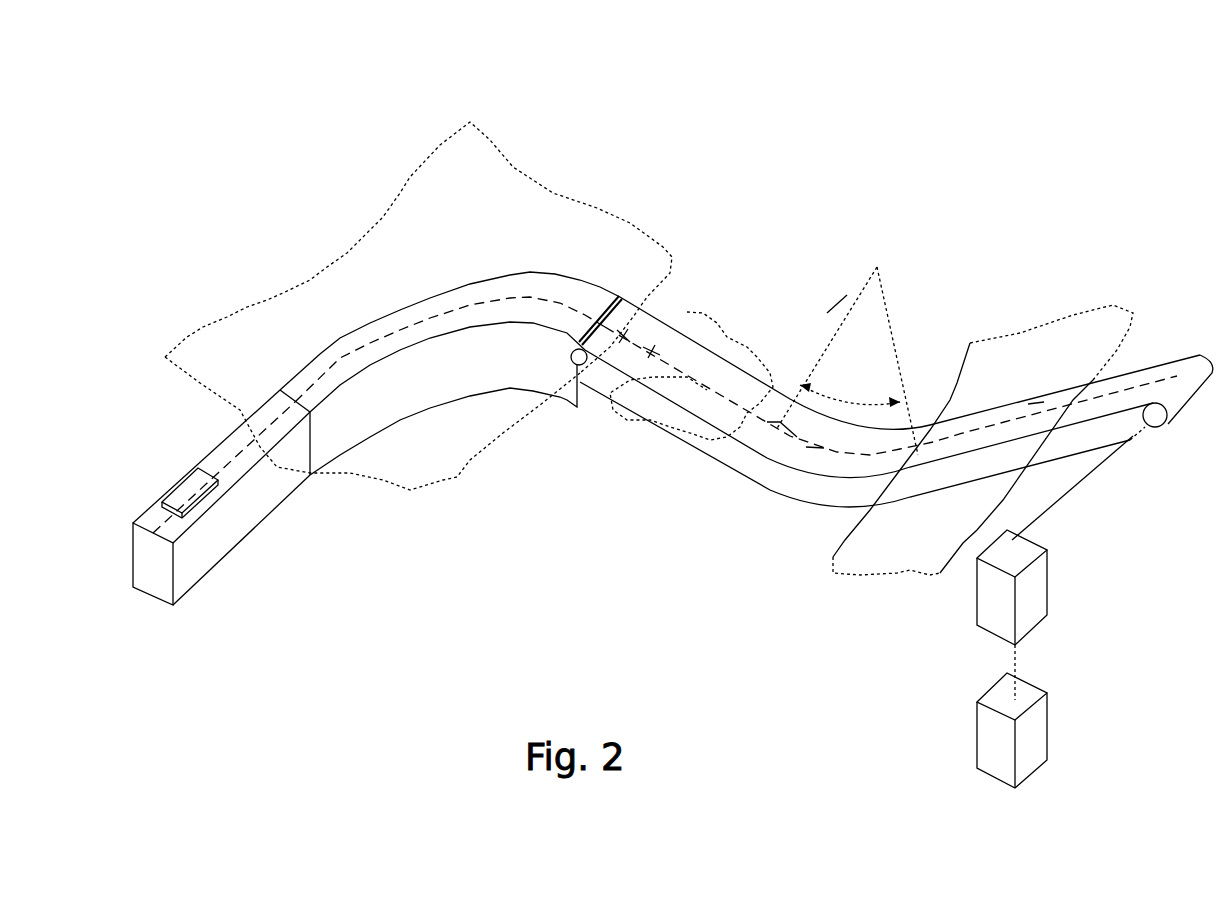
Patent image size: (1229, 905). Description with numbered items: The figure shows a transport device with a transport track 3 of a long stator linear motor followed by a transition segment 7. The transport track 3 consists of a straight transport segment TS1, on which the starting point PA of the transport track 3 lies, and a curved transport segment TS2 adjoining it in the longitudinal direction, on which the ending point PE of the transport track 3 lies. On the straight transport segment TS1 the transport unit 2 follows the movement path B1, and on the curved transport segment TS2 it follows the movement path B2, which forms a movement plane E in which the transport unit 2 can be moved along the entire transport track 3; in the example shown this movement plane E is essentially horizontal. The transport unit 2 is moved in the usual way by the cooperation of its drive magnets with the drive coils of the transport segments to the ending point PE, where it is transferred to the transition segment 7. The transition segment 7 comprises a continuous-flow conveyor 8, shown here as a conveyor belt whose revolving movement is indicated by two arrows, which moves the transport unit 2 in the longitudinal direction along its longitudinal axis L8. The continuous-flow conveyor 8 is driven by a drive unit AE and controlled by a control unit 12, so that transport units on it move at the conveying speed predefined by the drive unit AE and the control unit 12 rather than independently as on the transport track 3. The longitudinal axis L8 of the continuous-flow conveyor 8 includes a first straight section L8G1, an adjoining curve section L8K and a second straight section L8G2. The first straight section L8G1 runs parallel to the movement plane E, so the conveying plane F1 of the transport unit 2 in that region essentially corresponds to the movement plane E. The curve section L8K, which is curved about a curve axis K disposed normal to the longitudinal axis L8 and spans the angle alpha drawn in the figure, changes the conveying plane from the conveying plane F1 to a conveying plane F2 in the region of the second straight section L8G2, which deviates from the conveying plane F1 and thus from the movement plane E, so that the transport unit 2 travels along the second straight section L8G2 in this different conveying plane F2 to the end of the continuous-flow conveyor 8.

The transport track 3 is at (386, 138).
The movement plane E is at (325, 270).
The straight transport segment TS1 is at (380, 540).
The starting point PA is at (165, 518).
The movement path B1 is at (272, 462).
The transport unit 2 is at (187, 493).
The movement path B2 is at (448, 310).
The ending point PE is at (598, 318).
The curved transport segment TS2 is at (507, 352).
The continuous-flow conveyor 8 is at (820, 490).
The transition segment 7 is at (687, 457).
The longitudinal axis L8 is at (680, 410).
The curve section L8K is at (810, 448).
The first straight section L8G1 is at (735, 383).
The second straight section L8G2 is at (1035, 405).
The curve axis K is at (907, 238).
The curve angle alpha is at (850, 391).
The conveying plane F1 is at (690, 310).
The conveying plane F2 is at (897, 575).
The drive unit AE is at (1050, 597).
The control unit 12 is at (1050, 723).